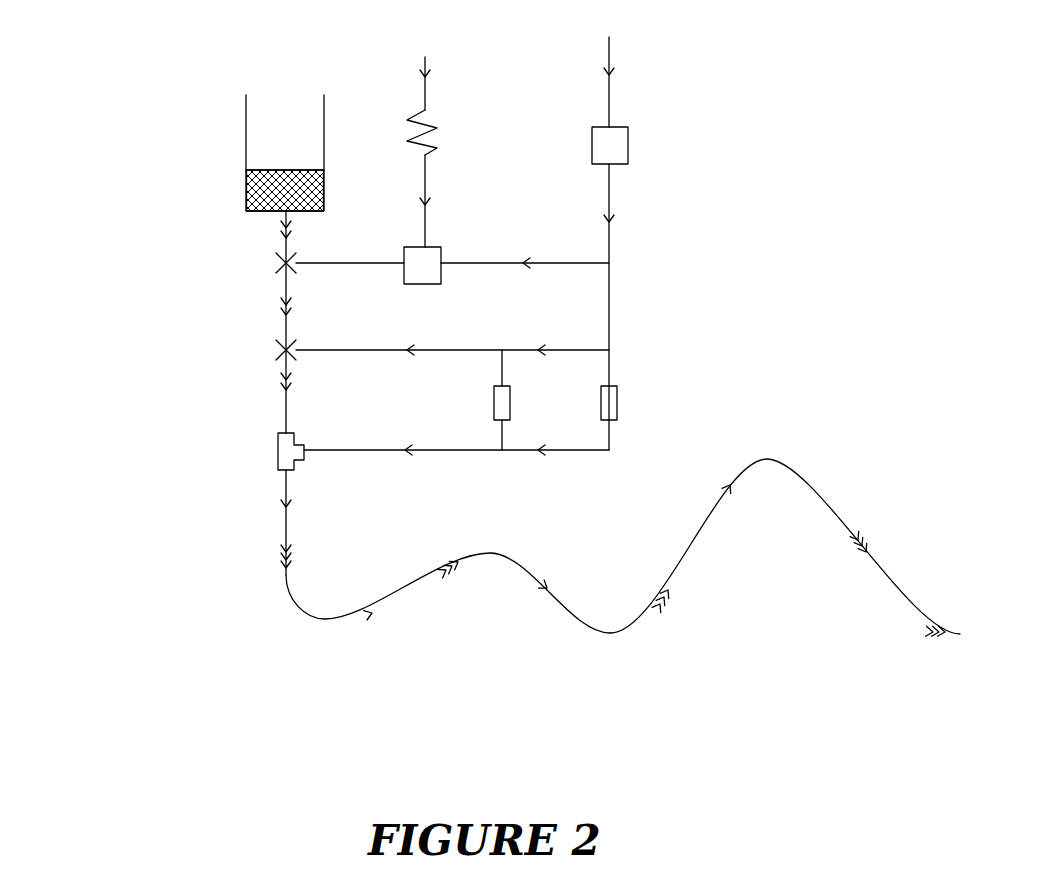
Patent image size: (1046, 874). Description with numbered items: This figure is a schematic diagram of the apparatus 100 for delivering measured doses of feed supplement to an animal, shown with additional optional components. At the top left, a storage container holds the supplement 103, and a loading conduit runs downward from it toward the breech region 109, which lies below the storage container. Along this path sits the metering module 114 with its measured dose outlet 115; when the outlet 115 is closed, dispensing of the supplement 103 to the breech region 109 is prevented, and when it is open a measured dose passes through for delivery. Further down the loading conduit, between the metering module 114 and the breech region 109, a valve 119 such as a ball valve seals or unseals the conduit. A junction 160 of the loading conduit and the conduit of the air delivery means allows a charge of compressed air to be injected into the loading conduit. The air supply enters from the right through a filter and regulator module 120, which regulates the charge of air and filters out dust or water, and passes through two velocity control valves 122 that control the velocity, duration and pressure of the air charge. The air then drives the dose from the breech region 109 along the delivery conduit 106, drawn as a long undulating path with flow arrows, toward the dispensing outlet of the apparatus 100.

The apparatus 100 is at (128, 192).
The supplement 103 is at (278, 175).
The delivery conduit 106 is at (649, 618).
The breech region 109 is at (328, 619).
The metering module 114 is at (441, 250).
The measured dose outlet 115 is at (270, 263).
The valve 119 is at (272, 350).
The filter and regulator module 120 is at (630, 130).
The velocity control valve 122 is at (490, 393).
The junction 160 is at (273, 467).